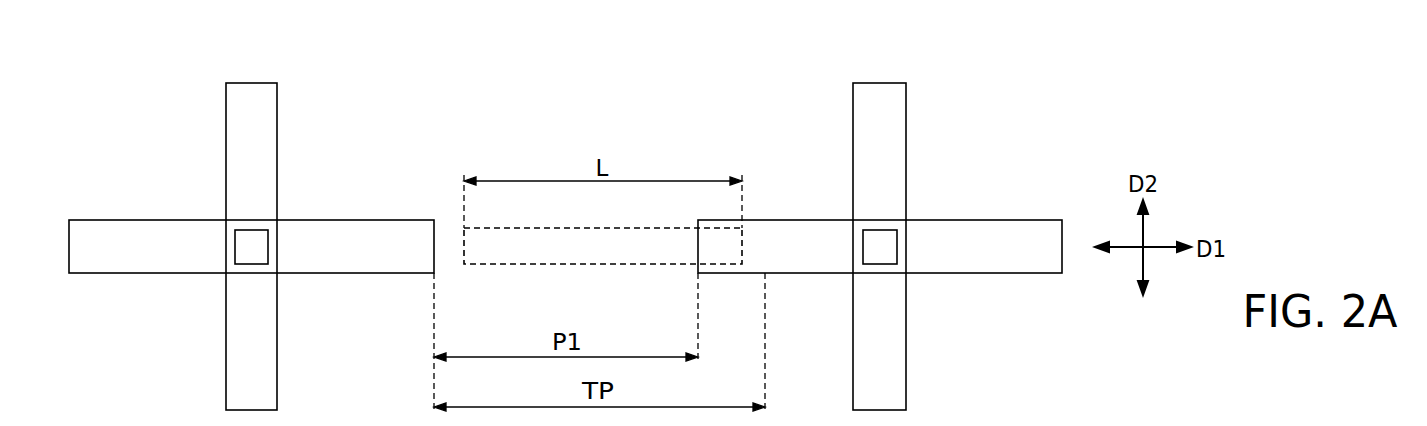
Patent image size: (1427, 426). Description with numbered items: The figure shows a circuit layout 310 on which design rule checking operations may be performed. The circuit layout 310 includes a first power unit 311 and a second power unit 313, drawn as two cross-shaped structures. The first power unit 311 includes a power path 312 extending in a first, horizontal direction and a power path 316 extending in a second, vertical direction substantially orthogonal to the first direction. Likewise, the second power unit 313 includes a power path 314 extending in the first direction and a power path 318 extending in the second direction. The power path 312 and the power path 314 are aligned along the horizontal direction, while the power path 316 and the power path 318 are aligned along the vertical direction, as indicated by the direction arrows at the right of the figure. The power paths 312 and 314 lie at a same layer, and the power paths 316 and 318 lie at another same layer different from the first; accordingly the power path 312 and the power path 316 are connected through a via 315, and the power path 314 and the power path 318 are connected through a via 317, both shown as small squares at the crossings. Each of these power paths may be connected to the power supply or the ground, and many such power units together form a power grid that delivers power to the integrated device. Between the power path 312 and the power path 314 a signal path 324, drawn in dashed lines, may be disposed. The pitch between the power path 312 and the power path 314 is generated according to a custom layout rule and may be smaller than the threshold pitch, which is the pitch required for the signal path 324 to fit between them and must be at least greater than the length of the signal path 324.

The circuit layout 310 is at (50, 100).
The first power unit 311 is at (206, 201).
The power path 312 is at (385, 228).
The second power unit 313 is at (925, 293).
The power path 314 is at (1012, 230).
The via 315 is at (247, 248).
The power path 316 is at (253, 92).
The via 317 is at (875, 248).
The power path 318 is at (880, 92).
The signal path 324 is at (604, 268).